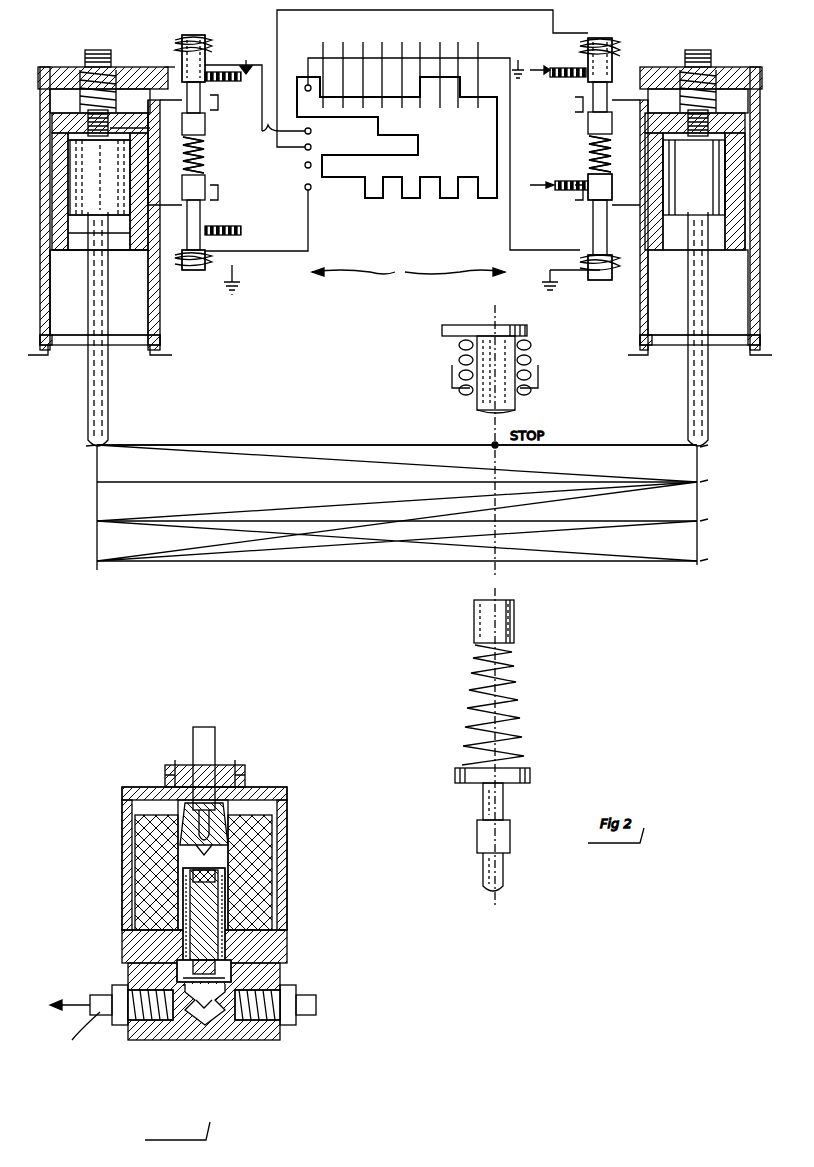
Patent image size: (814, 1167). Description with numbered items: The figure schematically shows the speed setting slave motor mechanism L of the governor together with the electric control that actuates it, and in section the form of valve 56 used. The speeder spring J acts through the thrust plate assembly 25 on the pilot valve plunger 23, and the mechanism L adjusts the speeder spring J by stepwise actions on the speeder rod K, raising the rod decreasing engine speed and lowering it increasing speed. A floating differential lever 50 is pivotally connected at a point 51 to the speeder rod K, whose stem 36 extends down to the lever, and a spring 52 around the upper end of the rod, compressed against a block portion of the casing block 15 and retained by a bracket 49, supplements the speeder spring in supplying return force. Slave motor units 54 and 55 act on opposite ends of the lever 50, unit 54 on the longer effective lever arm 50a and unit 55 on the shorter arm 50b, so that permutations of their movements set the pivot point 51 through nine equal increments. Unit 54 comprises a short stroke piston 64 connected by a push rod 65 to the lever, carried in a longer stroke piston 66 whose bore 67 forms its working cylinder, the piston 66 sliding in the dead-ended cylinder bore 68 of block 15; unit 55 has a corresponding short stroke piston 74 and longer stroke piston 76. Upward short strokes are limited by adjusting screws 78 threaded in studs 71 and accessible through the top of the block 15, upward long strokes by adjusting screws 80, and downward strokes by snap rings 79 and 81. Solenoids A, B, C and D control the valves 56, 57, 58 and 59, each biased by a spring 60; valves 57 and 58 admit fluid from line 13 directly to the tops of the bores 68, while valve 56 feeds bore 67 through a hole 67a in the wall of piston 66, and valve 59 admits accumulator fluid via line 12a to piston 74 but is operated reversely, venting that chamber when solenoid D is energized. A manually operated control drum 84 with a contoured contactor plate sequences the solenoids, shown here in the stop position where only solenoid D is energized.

In FIG. 2, the line 13 is at (228, 82).
In FIG. 3, the line 13 is at (300, 996).
In FIG. 2, the casing block 15 is at (128, 72).
In FIG. 2, the pilot valve plunger 23 is at (505, 888).
In FIG. 2, the thrust plate assembly 25 is at (532, 778).
In FIG. 2, the stem 36 is at (494, 414).
In FIG. 2, the bracket 49 is at (546, 374).
In FIG. 2, the floating differential lever 50 is at (336, 488).
In FIG. 2, the effective lever arm 50a is at (238, 446).
In FIG. 2, the effective lever arm 50b is at (646, 446).
In FIG. 2, the pivot point 51 is at (494, 445).
In FIG. 2, the spring 52 is at (532, 347).
In FIG. 2, the slave motor unit 54 is at (40, 115).
In FIG. 2, the slave motor unit 55 is at (754, 112).
In FIG. 2, the solenoid-operated valve 56 is at (170, 200).
In FIG. 3, the solenoid-operated valve 56 is at (296, 920).
In FIG. 2, the solenoid-operated valve 57 is at (618, 82).
In FIG. 2, the solenoid-operated valve 58 is at (167, 70).
In FIG. 2, the solenoid-operated valve 59 is at (618, 194).
In FIG. 2, the biasing spring 60 is at (613, 152).
In FIG. 3, the biasing spring 60 is at (182, 975).
In FIG. 2, the piston 64 is at (74, 190).
In FIG. 2, the push rod 65 is at (94, 300).
In FIG. 2, the piston 66 is at (70, 216).
In FIG. 2, the bore 67 is at (68, 235).
In FIG. 2, the hole 67a is at (136, 140).
In FIG. 2, the cylinder bore 68 is at (50, 290).
In FIG. 2, the threaded stud 71 is at (78, 108).
In FIG. 2, the short stroke piston 74 is at (748, 148).
In FIG. 2, the longer stroke piston 76 is at (748, 170).
In FIG. 2, the adjusting screw 78 is at (112, 120).
In FIG. 2, the snap ring 79 is at (60, 250).
In FIG. 2, the adjusting screw 80 is at (85, 55).
In FIG. 2, the snap ring 81 is at (40, 338).
In FIG. 2, the control drum 84 is at (470, 200).
In FIG. 2, the terminal 12a is at (559, 197).
In FIG. 2, the solenoid A is at (186, 270).
In FIG. 3, the solenoid A is at (262, 846).
In FIG. 2, the solenoid B is at (588, 34).
In FIG. 2, the solenoid C is at (184, 30).
In FIG. 2, the solenoid D is at (620, 280).
In FIG. 2, the speeder rod K is at (516, 636).
In FIG. 2, the speeder spring J is at (522, 736).
In FIG. 2, the speed setting slave motor mechanism L is at (408, 276).